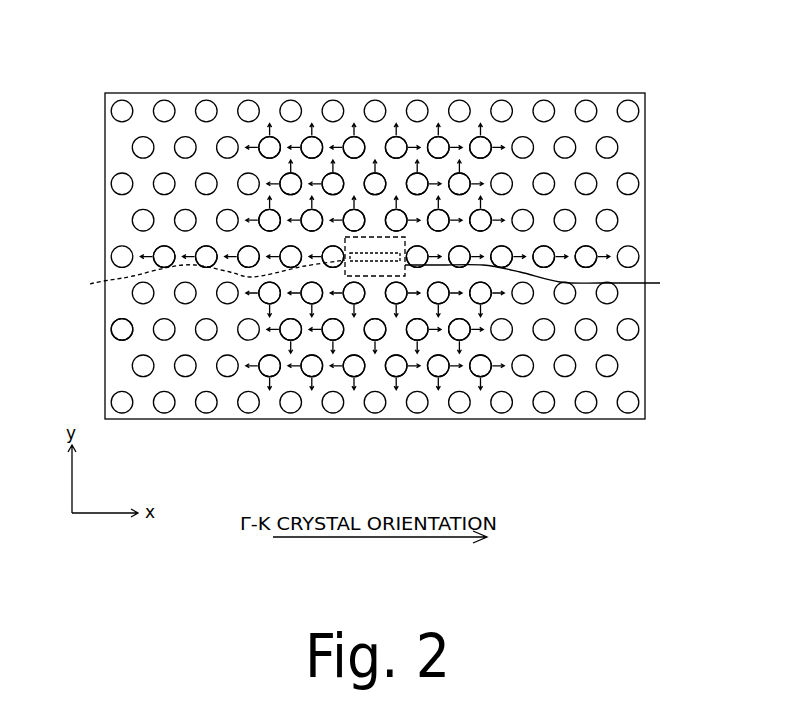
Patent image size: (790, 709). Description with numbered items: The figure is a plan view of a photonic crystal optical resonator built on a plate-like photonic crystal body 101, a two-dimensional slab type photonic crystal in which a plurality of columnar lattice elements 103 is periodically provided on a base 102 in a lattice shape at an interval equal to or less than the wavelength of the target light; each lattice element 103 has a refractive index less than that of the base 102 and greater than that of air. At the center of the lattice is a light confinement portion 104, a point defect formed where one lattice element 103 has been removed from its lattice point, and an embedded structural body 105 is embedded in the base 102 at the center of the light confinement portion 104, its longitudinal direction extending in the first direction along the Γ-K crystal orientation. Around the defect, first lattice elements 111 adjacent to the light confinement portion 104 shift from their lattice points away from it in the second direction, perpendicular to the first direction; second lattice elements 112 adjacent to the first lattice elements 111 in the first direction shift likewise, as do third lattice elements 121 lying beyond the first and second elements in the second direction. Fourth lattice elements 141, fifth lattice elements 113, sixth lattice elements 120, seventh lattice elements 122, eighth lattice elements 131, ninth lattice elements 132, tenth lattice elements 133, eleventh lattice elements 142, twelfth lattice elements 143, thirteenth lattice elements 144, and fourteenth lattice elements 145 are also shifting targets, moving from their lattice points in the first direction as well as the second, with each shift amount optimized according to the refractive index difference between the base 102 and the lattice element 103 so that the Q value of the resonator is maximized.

The photonic crystal body 101 is at (664, 261).
The base 102 is at (105, 374).
The lattice element 103 is at (111, 329).
The light confinement portion 104 is at (547, 279).
The embedded structural body 105 is at (200, 277).
The first lattice element 111 is at (375, 257).
The second lattice element 112 is at (375, 257).
The fifth lattice element 113 is at (375, 257).
The sixth lattice element 120 is at (375, 256).
The third lattice element 121 is at (375, 257).
The seventh lattice element 122 is at (375, 256).
The eighth lattice element 131 is at (375, 257).
The ninth lattice element 132 is at (375, 256).
The tenth lattice element 133 is at (375, 257).
The fourth lattice element 141 is at (375, 197).
The eleventh lattice element 142 is at (375, 208).
The twelfth lattice element 143 is at (375, 220).
The thirteenth lattice element 144 is at (375, 232).
The fourteenth lattice element 145 is at (375, 244).